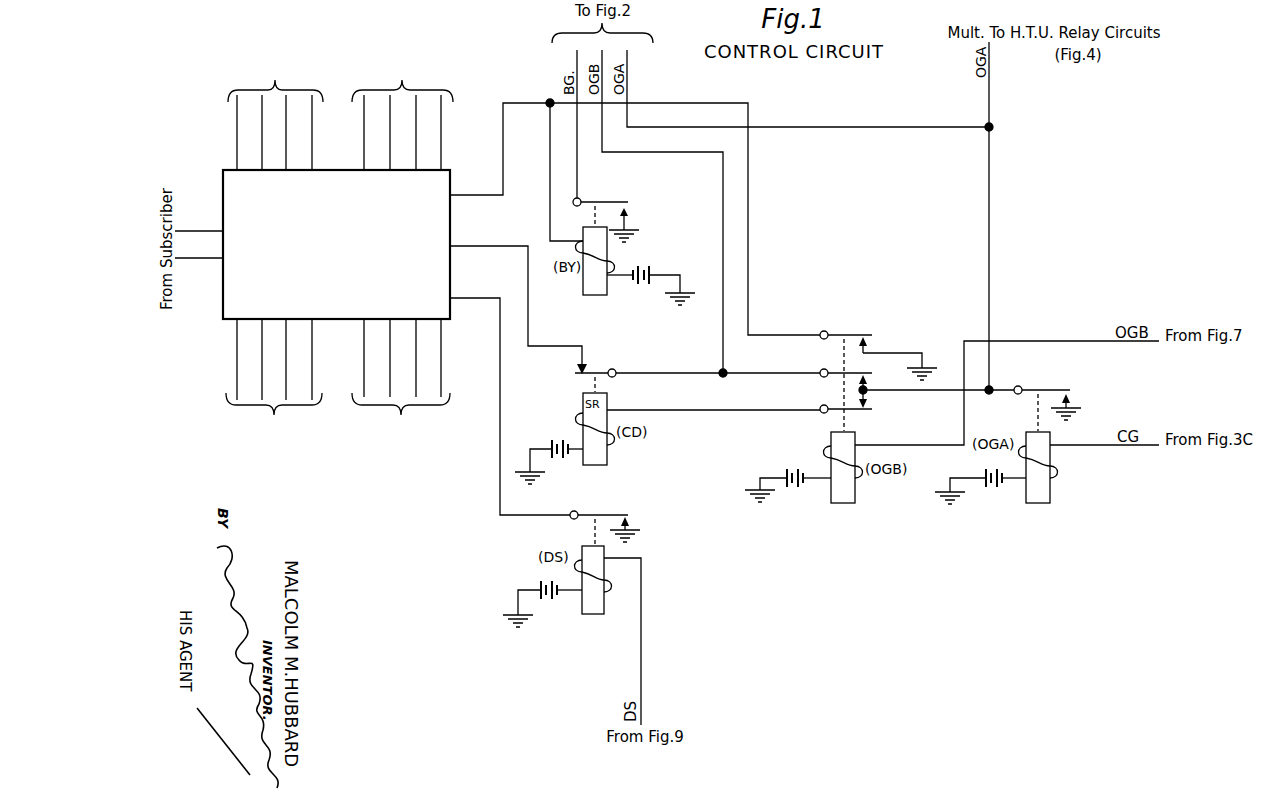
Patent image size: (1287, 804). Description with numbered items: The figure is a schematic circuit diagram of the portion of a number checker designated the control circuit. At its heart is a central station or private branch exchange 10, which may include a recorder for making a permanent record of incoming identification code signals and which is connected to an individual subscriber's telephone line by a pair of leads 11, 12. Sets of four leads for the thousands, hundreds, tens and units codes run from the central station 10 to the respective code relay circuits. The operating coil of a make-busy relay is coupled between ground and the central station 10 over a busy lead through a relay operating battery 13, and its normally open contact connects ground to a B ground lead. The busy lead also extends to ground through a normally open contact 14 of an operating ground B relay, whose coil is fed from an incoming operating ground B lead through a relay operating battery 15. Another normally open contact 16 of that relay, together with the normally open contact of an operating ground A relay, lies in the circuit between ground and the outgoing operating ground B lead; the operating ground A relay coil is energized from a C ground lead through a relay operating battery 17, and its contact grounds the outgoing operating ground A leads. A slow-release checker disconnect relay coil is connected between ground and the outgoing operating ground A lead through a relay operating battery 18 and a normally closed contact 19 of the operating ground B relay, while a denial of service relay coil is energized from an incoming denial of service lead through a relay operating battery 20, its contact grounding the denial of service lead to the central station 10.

The central station 10 is at (452, 174).
The lead 11 is at (194, 231).
The lead 12 is at (195, 258).
The relay operating battery 13 is at (651, 275).
The normally open contact 14 is at (875, 337).
The relay operating battery 15 is at (786, 490).
The normally open contact 16 is at (869, 382).
The relay operating battery 17 is at (994, 490).
The relay operating battery 18 is at (562, 467).
The normally closed contact 19 is at (868, 397).
The relay operating battery 20 is at (548, 604).